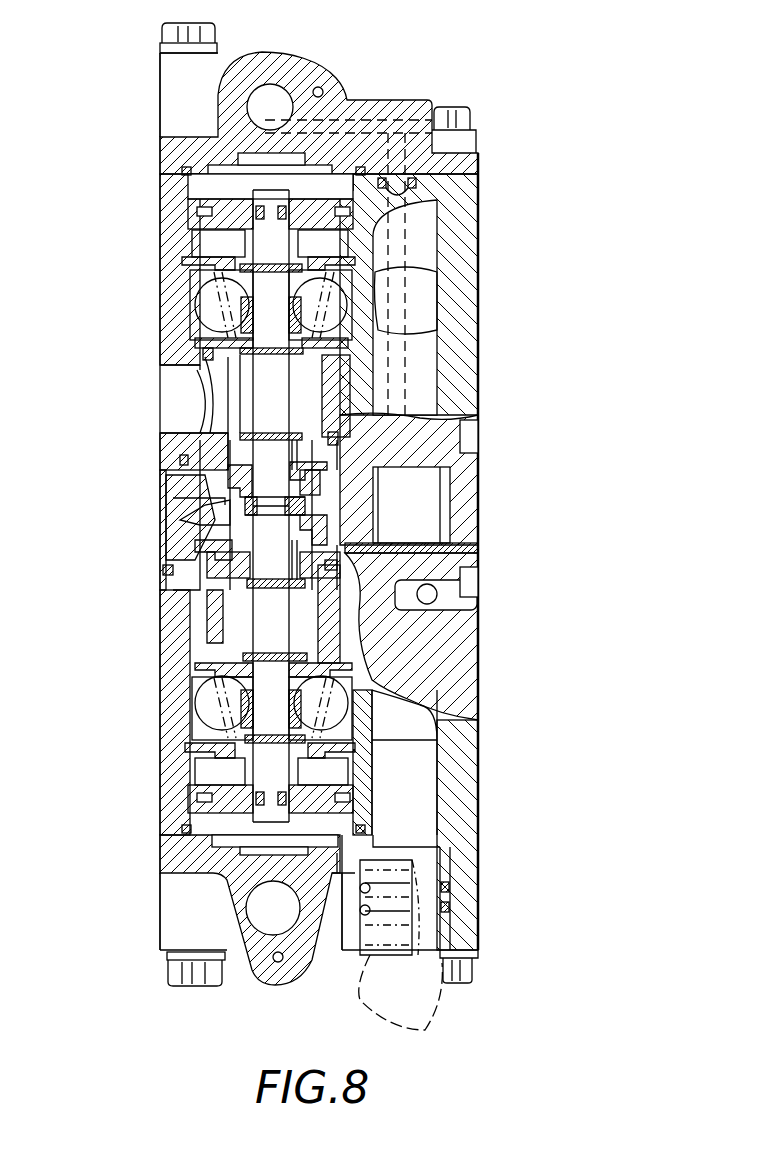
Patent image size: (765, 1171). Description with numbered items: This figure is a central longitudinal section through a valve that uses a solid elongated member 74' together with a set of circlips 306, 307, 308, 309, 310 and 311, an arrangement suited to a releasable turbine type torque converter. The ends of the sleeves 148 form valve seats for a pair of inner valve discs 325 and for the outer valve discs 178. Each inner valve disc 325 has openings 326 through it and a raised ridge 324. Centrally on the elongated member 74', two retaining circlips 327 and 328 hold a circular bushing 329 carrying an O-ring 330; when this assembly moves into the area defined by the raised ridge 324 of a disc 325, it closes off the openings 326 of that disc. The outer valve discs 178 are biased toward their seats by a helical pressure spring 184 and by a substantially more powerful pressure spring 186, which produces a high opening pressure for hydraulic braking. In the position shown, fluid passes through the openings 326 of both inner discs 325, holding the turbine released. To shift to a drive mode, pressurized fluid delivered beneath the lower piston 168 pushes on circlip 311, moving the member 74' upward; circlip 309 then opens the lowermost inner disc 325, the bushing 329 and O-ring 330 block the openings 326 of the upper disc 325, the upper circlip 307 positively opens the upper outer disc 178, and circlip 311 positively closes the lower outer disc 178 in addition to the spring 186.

The elongated member 74' is at (270, 506).
The lower piston 168 is at (188, 178).
The circlip 306 is at (302, 270).
The pressure spring 186 is at (298, 290).
The outer valve disc 178 is at (197, 334).
The upper circlip 307 is at (235, 365).
The sleeve 148 is at (320, 405).
The circlip 308 is at (338, 442).
The raised ridge 324 is at (232, 490).
The openings 326 is at (240, 478).
The circular bushing 329 is at (222, 501).
The O-ring 330 is at (225, 519).
The circlip 327 is at (274, 526).
The inner valve disc 325 is at (215, 540).
The circlip 328 is at (330, 540).
The circlip 309 is at (322, 586).
The circlip 310 is at (280, 650).
The helical pressure spring 184 is at (308, 722).
The circlip 311 is at (280, 742).